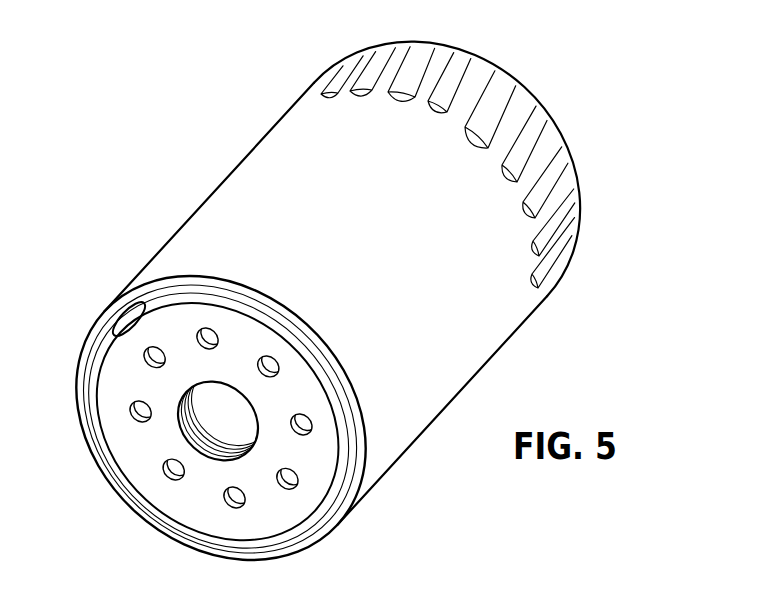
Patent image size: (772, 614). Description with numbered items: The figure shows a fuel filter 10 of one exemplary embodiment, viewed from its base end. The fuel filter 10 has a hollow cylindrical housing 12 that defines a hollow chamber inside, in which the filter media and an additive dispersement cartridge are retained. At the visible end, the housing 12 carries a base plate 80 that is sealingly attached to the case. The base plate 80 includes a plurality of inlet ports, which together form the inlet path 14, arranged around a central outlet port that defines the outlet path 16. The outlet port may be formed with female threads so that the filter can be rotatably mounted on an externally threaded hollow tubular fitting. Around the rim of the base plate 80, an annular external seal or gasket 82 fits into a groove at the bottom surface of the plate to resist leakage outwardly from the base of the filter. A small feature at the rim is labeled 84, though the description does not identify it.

The fuel filter 10 is at (618, 106).
The housing 12 is at (452, 342).
The inlet path 14 is at (172, 478).
The outlet path 16 is at (245, 452).
The base plate 80 is at (297, 511).
The gasket 82 is at (113, 482).
The tab 84 is at (136, 333).